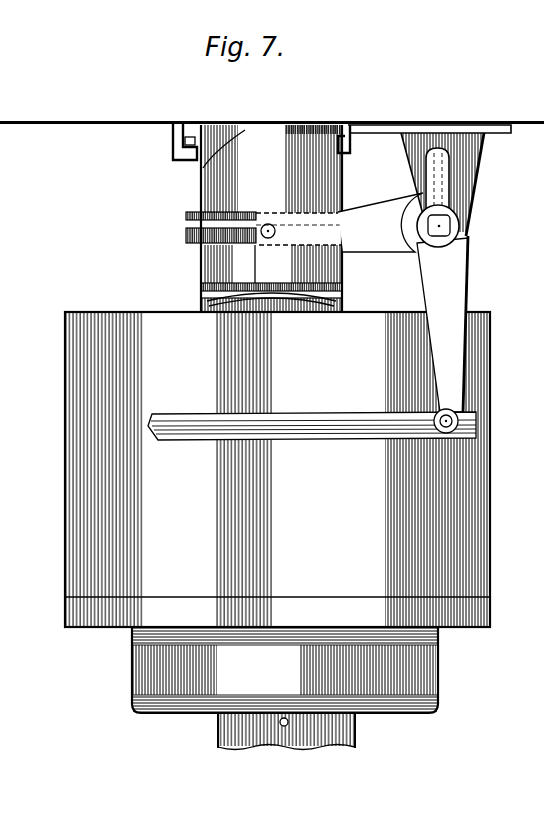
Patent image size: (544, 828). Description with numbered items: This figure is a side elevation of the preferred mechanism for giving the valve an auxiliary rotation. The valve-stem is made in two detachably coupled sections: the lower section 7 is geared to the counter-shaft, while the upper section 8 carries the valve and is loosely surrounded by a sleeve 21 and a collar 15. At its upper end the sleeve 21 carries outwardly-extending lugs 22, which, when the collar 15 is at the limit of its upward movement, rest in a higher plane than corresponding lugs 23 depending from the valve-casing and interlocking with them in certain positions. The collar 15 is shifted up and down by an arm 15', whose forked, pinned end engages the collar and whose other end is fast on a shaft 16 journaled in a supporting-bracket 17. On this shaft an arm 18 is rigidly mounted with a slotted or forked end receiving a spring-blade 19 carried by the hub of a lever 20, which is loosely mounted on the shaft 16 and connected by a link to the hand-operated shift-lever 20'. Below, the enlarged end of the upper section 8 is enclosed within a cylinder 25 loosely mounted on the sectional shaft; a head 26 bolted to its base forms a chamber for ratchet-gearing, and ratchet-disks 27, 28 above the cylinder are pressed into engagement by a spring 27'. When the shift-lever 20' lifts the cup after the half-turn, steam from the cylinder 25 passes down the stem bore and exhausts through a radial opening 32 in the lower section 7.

The lower section 7 is at (357, 736).
The upper section 8 is at (203, 168).
The collar 15 is at (246, 228).
The arm 15' is at (380, 238).
The shaft 16 is at (446, 229).
The supporting-bracket 17 is at (413, 155).
The arm 18 is at (450, 181).
The spring-blade 19 is at (472, 151).
The lever 20 is at (470, 324).
The hand-operated shift-lever 20' is at (312, 438).
The sleeve 21 is at (200, 197).
The lugs 22 is at (190, 143).
The lugs 23 is at (172, 155).
The cylinder 25 is at (490, 529).
The head 26 is at (132, 669).
The ratchet-disk 27 is at (240, 297).
The spring 27' is at (243, 282).
The ratchet-disk 28 is at (230, 316).
The radial opening 32 is at (279, 722).